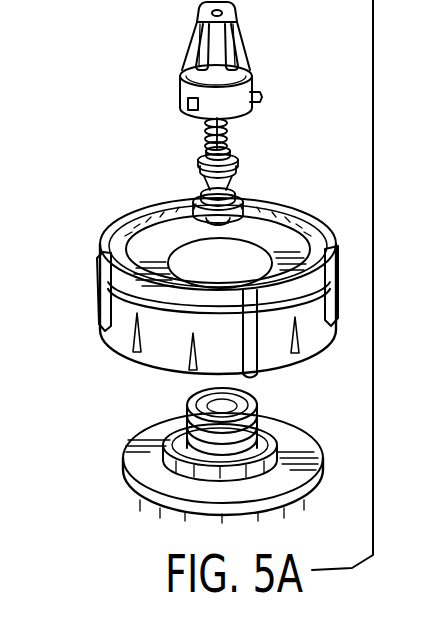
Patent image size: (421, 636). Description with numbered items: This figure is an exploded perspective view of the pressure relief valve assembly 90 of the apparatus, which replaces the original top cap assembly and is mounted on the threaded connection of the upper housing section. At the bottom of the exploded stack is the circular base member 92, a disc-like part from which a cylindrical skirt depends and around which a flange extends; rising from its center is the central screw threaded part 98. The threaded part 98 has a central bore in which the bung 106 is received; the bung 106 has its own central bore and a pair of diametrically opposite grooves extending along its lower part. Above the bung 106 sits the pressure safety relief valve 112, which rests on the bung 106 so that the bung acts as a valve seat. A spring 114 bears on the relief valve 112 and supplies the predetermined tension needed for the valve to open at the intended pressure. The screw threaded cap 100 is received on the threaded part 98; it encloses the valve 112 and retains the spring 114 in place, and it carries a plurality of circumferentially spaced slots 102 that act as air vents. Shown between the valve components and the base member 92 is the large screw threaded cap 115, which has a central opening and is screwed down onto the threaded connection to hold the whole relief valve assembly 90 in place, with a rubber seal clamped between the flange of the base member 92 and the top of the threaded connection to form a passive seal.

The screw threaded cap 100 is at (190, 36).
The circumferentially spaced slots 102 is at (240, 45).
The spring 114 is at (227, 126).
The pressure safety relief valve 112 is at (238, 170).
The bung 106 is at (197, 190).
The screw threaded cap 115 is at (110, 262).
The pressure relief valve assembly 90 is at (108, 365).
The circular base member 92 is at (135, 458).
The central screw threaded part 98 is at (257, 413).